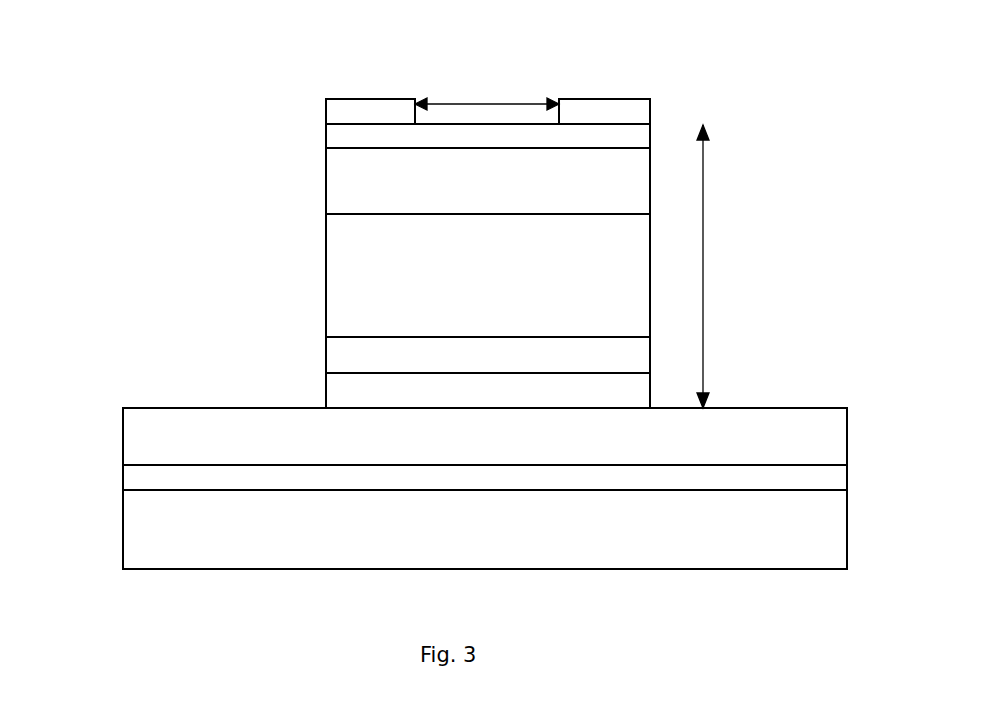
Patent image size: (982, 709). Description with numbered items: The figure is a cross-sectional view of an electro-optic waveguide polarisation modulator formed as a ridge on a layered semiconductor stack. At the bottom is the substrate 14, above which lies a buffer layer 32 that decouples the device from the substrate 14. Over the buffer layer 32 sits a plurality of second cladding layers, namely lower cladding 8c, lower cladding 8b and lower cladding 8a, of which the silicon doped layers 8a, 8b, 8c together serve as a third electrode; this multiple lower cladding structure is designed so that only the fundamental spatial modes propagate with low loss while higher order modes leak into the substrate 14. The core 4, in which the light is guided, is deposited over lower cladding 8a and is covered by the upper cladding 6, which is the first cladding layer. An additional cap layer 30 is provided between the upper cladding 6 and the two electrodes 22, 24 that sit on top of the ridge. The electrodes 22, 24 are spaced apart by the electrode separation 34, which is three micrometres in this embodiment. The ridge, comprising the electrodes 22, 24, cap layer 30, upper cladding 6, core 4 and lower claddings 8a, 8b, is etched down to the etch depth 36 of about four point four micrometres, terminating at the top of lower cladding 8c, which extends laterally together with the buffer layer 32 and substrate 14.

The electrode 22 is at (358, 109).
The electrode 24 is at (597, 110).
The electrode separation 34 is at (525, 103).
The cap layer 30 is at (332, 138).
The upper cladding layer 6 is at (332, 190).
The core 4 is at (332, 292).
The lower cladding layer 8a is at (332, 358).
The lower cladding layer 8b is at (330, 397).
The lower cladding layer 8c is at (135, 420).
The buffer layer 32 is at (135, 482).
The substrate 14 is at (485, 529).
The etch depth 36 is at (706, 244).